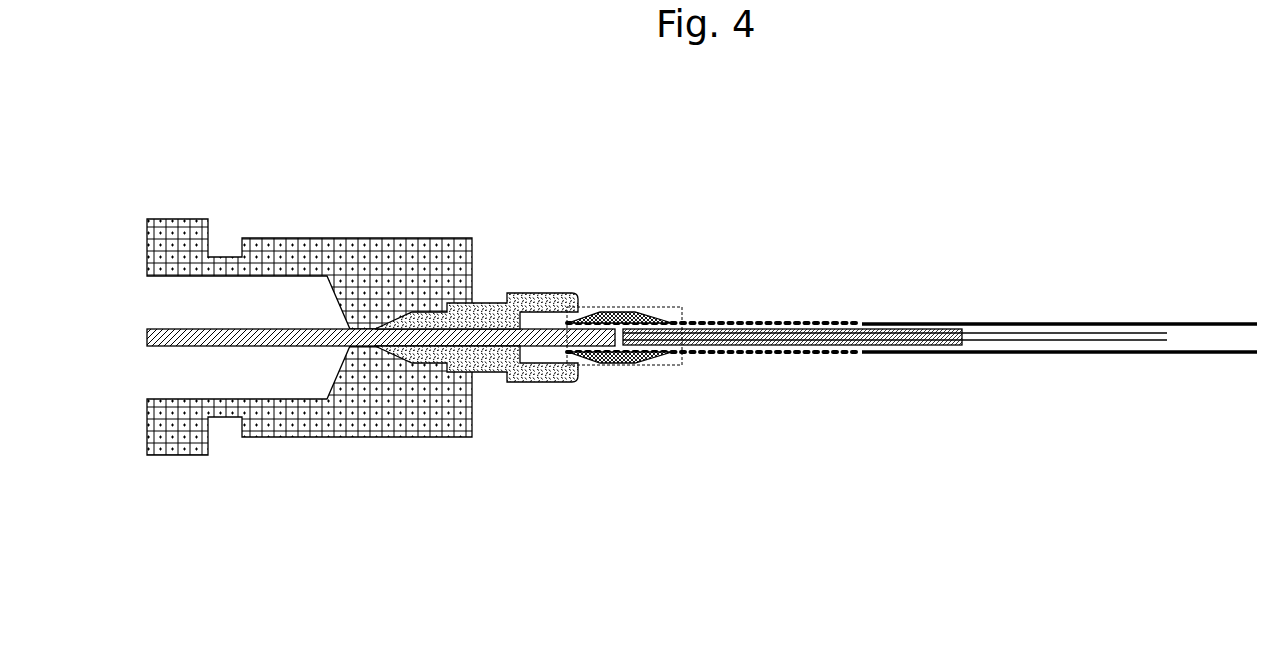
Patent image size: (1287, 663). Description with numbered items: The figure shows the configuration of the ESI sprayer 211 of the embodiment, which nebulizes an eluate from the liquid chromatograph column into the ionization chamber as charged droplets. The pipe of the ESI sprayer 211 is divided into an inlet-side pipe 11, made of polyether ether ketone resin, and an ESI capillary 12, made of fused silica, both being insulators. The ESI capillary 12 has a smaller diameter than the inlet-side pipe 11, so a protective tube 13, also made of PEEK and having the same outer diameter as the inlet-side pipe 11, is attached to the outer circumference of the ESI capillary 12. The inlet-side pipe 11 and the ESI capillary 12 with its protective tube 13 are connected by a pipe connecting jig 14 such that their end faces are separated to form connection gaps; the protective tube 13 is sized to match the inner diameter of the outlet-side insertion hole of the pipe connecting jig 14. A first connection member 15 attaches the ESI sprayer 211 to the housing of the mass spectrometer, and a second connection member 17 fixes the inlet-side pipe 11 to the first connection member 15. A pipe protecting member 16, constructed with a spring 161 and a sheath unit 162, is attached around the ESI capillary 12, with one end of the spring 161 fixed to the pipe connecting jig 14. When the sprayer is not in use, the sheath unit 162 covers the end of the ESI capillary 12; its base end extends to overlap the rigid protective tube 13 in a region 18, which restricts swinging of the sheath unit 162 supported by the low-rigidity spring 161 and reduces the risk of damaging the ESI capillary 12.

The ESI sprayer 211 is at (1095, 201).
The first connection member 15 is at (415, 433).
The inlet-side pipe 11 is at (205, 328).
The second connection member 17 is at (533, 382).
The pipe protecting member 16 is at (764, 384).
The spring 161 is at (793, 352).
The sheath unit 162 is at (900, 352).
The ESI capillary 12 is at (983, 340).
The protective tube 13 is at (917, 350).
The pipe connecting jig 14 is at (622, 363).
The region 18 is at (962, 325).